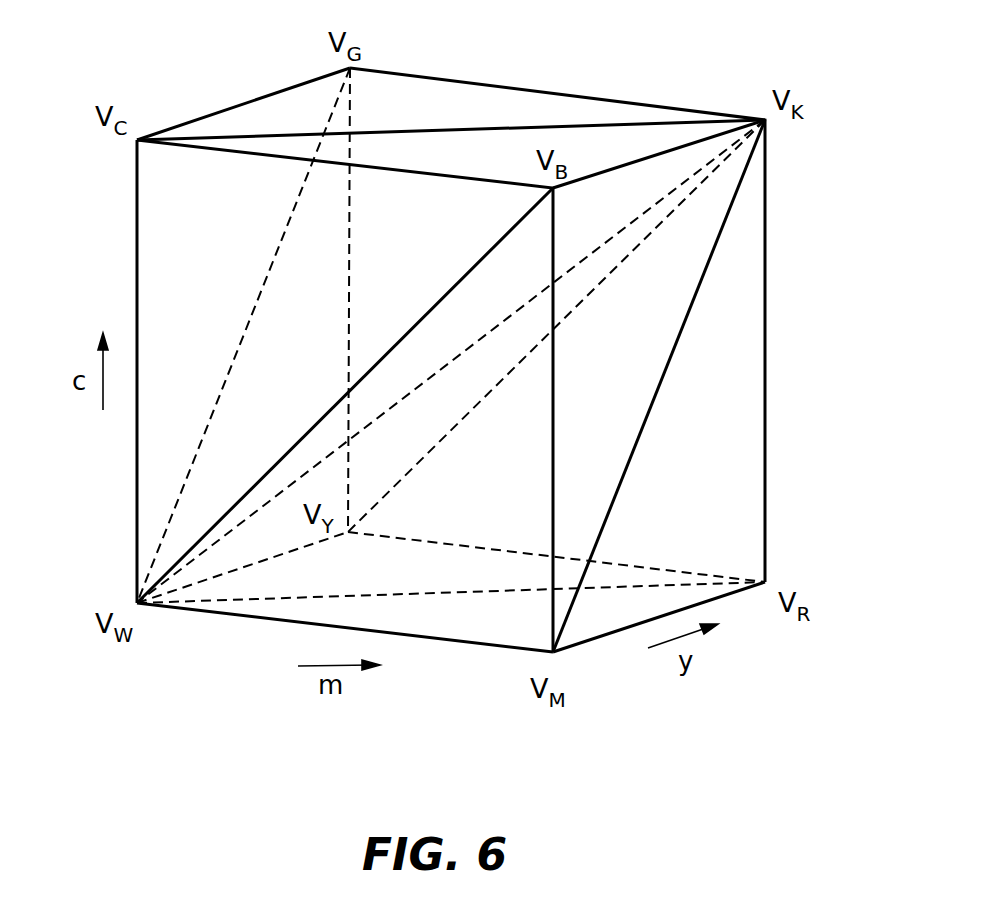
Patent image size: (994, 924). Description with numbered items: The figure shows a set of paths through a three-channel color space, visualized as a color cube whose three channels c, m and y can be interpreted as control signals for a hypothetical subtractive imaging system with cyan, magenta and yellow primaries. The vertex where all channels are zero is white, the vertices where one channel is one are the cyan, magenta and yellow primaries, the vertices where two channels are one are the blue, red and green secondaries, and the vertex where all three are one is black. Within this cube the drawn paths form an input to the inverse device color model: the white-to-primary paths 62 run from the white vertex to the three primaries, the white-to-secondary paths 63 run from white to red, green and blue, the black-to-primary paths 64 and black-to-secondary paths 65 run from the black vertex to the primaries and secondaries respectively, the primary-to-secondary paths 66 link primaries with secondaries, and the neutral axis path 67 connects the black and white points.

The white-to-primary paths 62 is at (136, 193).
The white-to-secondary paths 63 is at (203, 535).
The black-to-primary paths 64 is at (484, 130).
The black-to-secondary paths 65 is at (708, 115).
The primary-to-secondary paths 66 is at (268, 98).
The neutral axis path 67 is at (489, 330).